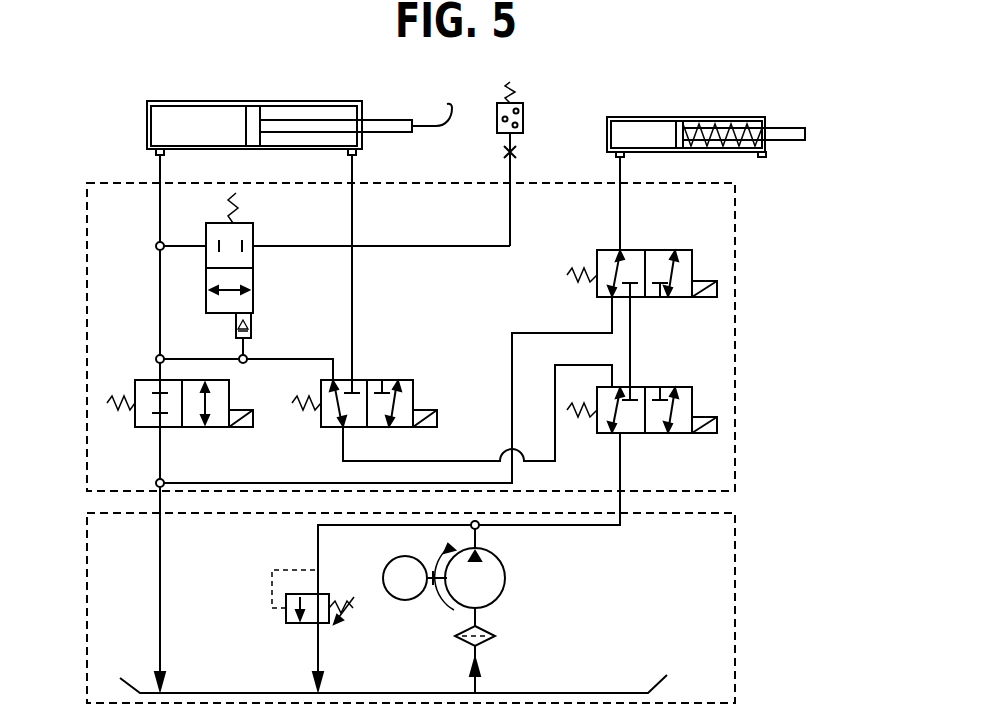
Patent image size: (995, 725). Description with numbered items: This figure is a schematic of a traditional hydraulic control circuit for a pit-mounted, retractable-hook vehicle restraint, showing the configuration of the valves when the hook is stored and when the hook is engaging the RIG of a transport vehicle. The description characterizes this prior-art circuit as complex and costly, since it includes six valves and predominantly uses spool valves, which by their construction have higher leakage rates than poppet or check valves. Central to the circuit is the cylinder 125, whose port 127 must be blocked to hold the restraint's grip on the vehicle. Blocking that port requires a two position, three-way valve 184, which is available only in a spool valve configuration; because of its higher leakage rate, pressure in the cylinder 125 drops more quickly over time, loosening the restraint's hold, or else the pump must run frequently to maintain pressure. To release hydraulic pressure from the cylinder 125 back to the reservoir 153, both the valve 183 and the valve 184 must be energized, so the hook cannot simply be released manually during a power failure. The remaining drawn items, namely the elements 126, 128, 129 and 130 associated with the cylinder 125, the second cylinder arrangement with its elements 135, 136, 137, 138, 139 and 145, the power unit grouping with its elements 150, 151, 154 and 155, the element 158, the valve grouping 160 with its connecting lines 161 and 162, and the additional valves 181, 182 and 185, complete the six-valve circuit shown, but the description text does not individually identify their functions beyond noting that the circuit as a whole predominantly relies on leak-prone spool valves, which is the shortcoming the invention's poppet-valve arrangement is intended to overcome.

The cylinder 125 is at (172, 101).
The cylinder port 126 is at (165, 155).
The port 127 is at (355, 155).
The piston 128 is at (257, 115).
The piston rod 129 is at (383, 120).
The connecting cable 130 is at (442, 135).
The second hydraulic cylinder 135 is at (640, 117).
The cylinder port 136 is at (626, 157).
The cylinder port 137 is at (762, 157).
The piston 138 is at (678, 130).
The piston rod 139 is at (795, 128).
The return spring 145 is at (740, 120).
The hydraulic power unit 150 is at (738, 622).
The electric motor 151 is at (408, 600).
The reservoir 153 is at (562, 692).
The hydraulic pump 154 is at (500, 552).
The pressure relief valve / return line 155 is at (290, 625).
The pressure sensor 158 is at (523, 110).
The valve unit 160 is at (738, 474).
The supply line 161 is at (621, 497).
The return line 162 is at (161, 497).
The flow control valve 181 is at (253, 276).
The solenoid valve 182 is at (652, 433).
The valve 183 is at (193, 427).
The two position, three-way valve 184 is at (378, 427).
The solenoid valve 185 is at (652, 297).